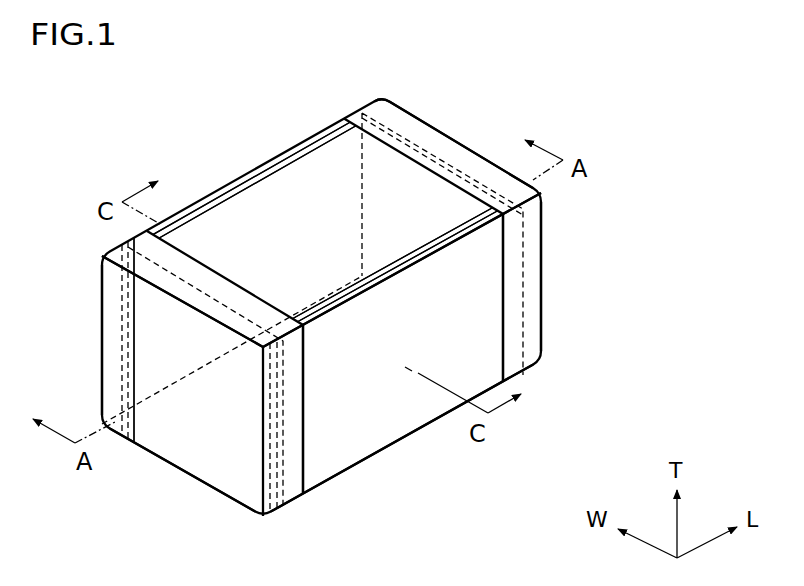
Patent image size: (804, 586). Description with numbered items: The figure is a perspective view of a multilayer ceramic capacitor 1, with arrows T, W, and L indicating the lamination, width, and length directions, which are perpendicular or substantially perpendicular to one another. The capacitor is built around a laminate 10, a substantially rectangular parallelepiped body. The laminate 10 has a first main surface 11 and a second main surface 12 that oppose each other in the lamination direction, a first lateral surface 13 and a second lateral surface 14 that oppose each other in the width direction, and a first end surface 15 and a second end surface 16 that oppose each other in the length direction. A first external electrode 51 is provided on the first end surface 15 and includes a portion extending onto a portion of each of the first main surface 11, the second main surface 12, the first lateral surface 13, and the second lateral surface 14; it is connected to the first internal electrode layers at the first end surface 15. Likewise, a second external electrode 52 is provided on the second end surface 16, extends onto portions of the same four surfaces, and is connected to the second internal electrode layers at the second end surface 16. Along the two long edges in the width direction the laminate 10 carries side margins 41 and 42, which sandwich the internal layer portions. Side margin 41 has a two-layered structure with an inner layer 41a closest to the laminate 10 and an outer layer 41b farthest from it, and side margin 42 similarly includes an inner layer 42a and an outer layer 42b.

The multilayer ceramic capacitor 1 is at (72, 182).
The laminate 10 is at (327, 160).
The first main surface 11 is at (350, 213).
The second main surface 12 is at (322, 443).
The first lateral surface 13 is at (163, 320).
The second lateral surface 14 is at (378, 400).
The first end surface 15 is at (193, 418).
The second end surface 16 is at (432, 202).
The side margin 41 is at (235, 96).
The inner layer 41a is at (281, 167).
The outer layer 41b is at (238, 190).
The side margin 42 is at (625, 207).
The inner layer 42a is at (483, 221).
The outer layer 42b is at (449, 246).
The first external electrode 51 is at (112, 363).
The second external electrode 52 is at (537, 297).